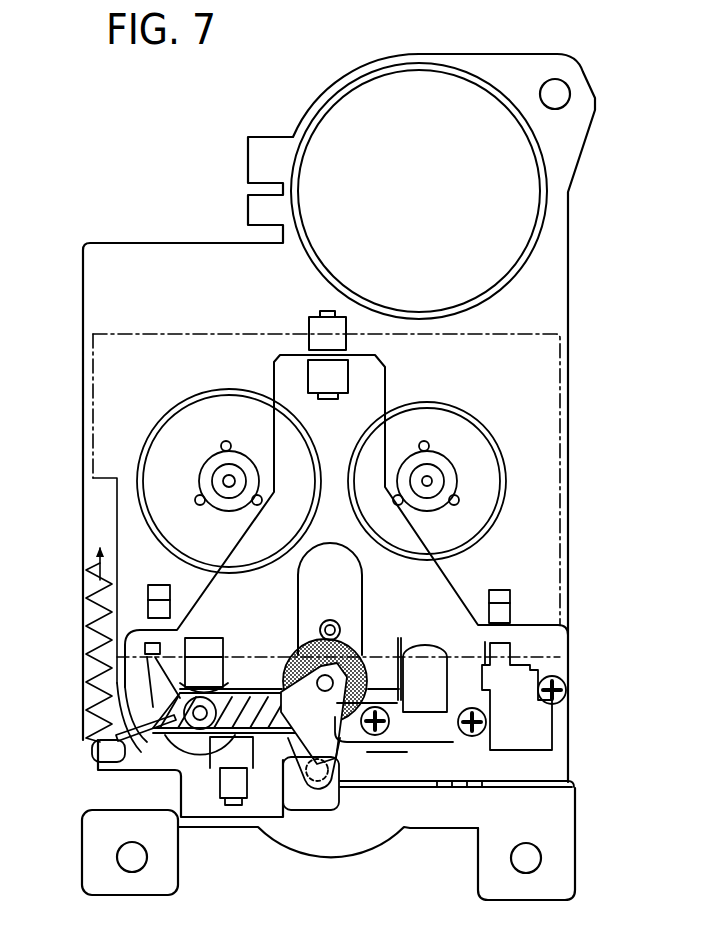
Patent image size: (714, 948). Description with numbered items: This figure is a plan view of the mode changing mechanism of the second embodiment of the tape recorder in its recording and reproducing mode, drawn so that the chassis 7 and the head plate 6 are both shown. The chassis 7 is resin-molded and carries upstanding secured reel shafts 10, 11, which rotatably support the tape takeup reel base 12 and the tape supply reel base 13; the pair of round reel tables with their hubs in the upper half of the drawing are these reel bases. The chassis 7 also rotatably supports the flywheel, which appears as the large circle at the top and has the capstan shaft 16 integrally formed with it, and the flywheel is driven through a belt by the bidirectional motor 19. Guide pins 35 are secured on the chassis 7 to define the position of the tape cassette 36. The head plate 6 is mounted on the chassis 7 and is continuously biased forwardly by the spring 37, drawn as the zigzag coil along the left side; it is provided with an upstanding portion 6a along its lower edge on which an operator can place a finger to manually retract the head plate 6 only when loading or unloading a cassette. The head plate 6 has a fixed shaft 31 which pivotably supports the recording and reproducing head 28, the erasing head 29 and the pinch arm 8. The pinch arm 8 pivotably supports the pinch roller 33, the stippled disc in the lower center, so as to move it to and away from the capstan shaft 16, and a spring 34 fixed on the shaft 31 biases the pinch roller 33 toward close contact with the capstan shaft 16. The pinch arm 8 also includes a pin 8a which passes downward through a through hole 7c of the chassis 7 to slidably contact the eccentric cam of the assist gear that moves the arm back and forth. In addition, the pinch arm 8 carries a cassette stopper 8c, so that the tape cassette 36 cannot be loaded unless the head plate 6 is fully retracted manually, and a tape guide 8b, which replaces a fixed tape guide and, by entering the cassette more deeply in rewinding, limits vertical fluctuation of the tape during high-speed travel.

The head plate 6 is at (573, 655).
The upstanding portion 6a is at (548, 790).
The chassis 7 is at (571, 290).
The through hole 7c is at (322, 790).
The pinch arm 8 is at (198, 752).
The pin 8a is at (312, 782).
The tape guide 8b is at (144, 642).
The cassette stopper 8c is at (208, 656).
The reel shaft 10 is at (222, 478).
The reel shaft 11 is at (436, 476).
The tape takeup reel base 12 is at (239, 462).
The tape supply reel base 13 is at (448, 470).
The capstan shaft 16 is at (344, 627).
The bidirectional motor 19 is at (528, 222).
The recording and reproducing head 28 is at (420, 656).
The erasing head 29 is at (540, 660).
The fixed shaft 31 is at (183, 746).
The pinch roller 33 is at (300, 663).
The spring 34 is at (118, 766).
The guide pin 35 is at (512, 603).
The tape cassette 36 is at (561, 428).
The spring 37 is at (90, 703).